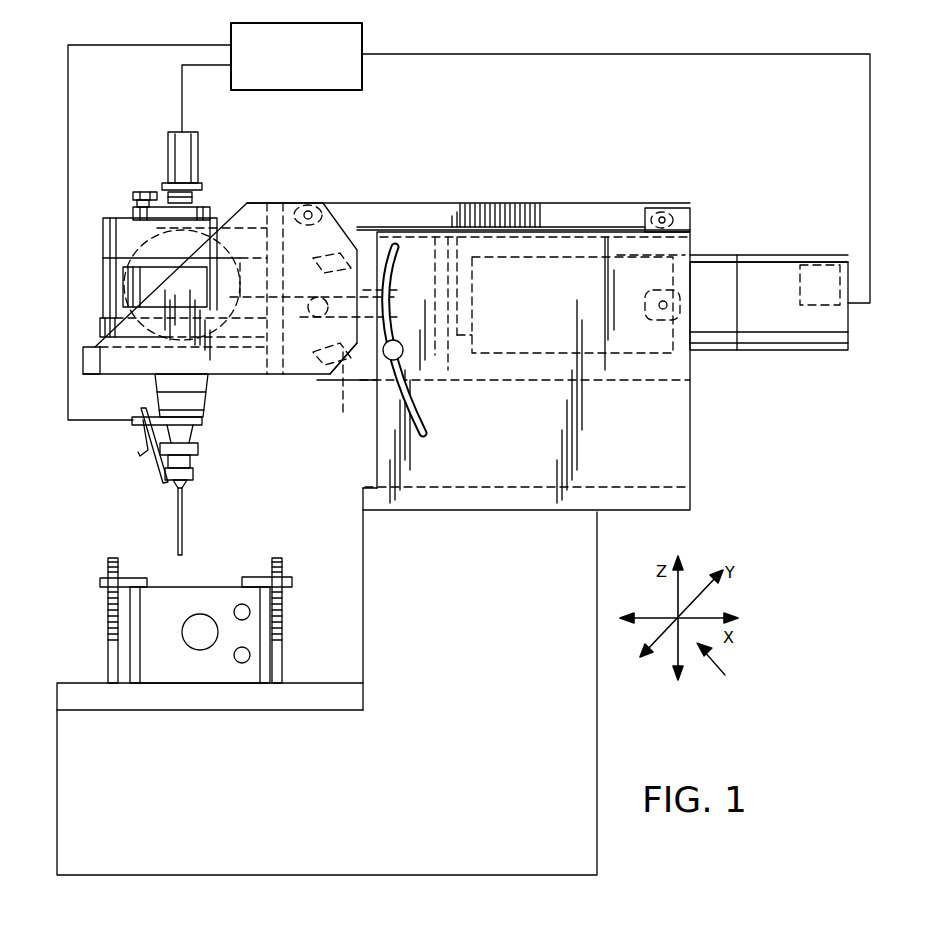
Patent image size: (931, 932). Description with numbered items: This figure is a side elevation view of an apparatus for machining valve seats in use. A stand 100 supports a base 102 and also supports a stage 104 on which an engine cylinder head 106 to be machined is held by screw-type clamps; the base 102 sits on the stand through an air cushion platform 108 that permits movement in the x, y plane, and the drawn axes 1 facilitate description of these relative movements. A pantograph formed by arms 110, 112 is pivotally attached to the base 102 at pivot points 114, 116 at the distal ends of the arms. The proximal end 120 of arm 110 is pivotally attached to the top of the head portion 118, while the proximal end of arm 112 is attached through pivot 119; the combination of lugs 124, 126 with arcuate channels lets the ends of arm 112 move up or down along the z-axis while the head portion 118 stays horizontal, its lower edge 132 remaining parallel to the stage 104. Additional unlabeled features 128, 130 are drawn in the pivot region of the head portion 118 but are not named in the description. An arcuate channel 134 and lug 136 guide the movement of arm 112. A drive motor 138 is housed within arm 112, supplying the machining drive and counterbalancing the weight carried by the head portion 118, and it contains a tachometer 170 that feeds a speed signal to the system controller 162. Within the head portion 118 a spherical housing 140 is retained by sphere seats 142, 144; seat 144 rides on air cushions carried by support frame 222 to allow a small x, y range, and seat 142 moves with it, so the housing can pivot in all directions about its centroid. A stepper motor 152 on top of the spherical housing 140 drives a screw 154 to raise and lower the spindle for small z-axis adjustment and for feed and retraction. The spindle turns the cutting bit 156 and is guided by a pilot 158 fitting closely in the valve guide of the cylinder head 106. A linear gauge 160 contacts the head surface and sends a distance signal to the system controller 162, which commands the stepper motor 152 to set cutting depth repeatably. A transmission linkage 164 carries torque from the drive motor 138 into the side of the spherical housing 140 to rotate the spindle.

The axes 1 is at (718, 670).
The stand 100 is at (582, 700).
The base 102 is at (678, 408).
The stage 104 is at (82, 693).
The engine cylinder head 106 is at (177, 590).
The air cushion platform 108 is at (678, 497).
The arm 110 is at (495, 202).
The arm 112 is at (557, 237).
The pivot point 114 is at (692, 210).
The pivot point 116 is at (705, 355).
The head portion 118 is at (255, 202).
The pivot 119 is at (305, 337).
The proximal end 120 is at (305, 205).
The lug 124 is at (327, 257).
The lug 126 is at (322, 350).
The pivot shaft 128 is at (303, 297).
The pivot axis 130 is at (343, 417).
The lower edge 132 is at (223, 377).
The arcuate channel 134 is at (423, 420).
The lug 136 is at (398, 353).
The drive motor 138 is at (795, 338).
The spherical housing 140 is at (138, 282).
The sphere seat 142 is at (113, 233).
The sphere seat 144 is at (100, 323).
The stepper motor 152 is at (172, 140).
The screw 154 is at (137, 218).
The cutting bit 156 is at (190, 485).
The pilot 158 is at (183, 537).
The linear gauge 160 is at (153, 472).
The system controller 162 is at (362, 68).
The transmission linkage 164 is at (363, 290).
The tachometer 170 is at (820, 263).
The support frame 222 is at (88, 362).